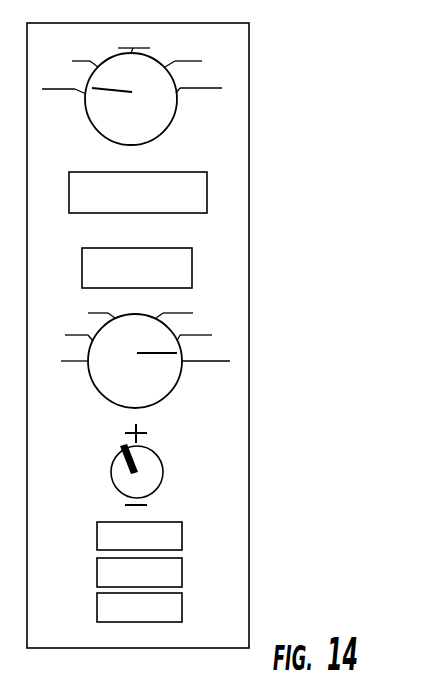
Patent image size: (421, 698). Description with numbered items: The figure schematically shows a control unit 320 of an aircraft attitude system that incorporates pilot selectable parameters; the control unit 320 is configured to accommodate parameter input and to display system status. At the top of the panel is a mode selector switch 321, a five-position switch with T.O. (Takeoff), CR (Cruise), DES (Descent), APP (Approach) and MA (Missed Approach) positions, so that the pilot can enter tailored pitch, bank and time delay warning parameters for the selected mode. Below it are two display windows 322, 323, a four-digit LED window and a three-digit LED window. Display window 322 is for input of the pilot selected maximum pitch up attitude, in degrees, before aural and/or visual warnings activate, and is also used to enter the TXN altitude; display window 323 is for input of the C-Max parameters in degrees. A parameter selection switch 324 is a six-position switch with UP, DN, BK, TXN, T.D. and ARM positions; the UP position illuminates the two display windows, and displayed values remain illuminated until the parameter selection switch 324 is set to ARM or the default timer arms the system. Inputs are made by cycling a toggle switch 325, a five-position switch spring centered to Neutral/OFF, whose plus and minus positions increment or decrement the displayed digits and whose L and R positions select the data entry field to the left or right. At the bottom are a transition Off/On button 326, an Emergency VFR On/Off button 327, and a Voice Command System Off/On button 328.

The control unit 320 is at (356, 80).
The mode selector switch 321 is at (192, 107).
The display window 322 is at (212, 181).
The display window 323 is at (197, 268).
The parameter selection switch 324 is at (197, 378).
The toggle switch 325 is at (165, 449).
The transition Off/On button 326 is at (186, 533).
The Emergency VFR On/Off button 327 is at (186, 570).
The Voice Command System Off/On button 328 is at (186, 602).